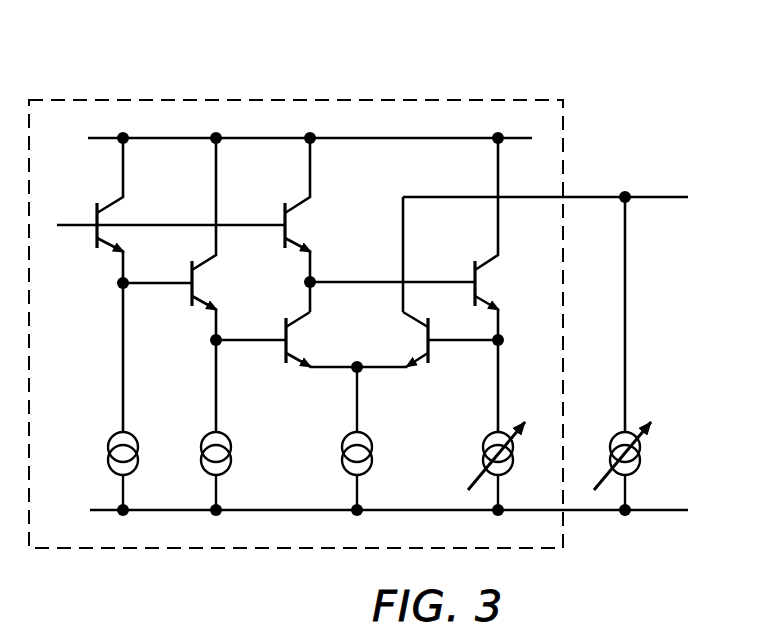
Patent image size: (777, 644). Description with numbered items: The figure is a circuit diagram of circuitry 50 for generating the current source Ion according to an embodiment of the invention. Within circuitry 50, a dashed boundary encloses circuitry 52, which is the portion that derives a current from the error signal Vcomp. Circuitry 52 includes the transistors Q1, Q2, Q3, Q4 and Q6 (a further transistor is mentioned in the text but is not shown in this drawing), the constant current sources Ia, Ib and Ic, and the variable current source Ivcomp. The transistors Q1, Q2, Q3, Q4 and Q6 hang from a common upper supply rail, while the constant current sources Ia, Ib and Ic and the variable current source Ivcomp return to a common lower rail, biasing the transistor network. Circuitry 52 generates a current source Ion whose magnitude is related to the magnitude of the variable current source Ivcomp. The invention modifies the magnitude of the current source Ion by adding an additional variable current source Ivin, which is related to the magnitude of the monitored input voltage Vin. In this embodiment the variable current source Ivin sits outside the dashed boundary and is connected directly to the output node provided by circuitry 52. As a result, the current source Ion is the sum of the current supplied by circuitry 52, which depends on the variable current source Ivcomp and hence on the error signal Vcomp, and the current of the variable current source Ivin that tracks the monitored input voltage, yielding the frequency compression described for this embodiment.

The circuitry 50 is at (636, 96).
The circuitry 52 is at (165, 97).
The transistor Q1 is at (97, 285).
The transistor Q2 is at (213, 285).
The transistor Q3 is at (308, 339).
The transistor Q4 is at (449, 285).
The transistor Q6 is at (308, 225).
The constant current source Ia is at (101, 471).
The constant current source Ib is at (234, 471).
The constant current source Ic is at (378, 438).
The variable current source Ivcomp is at (530, 466).
The variable current source Ivin is at (641, 353).
The current source Ion is at (545, 210).